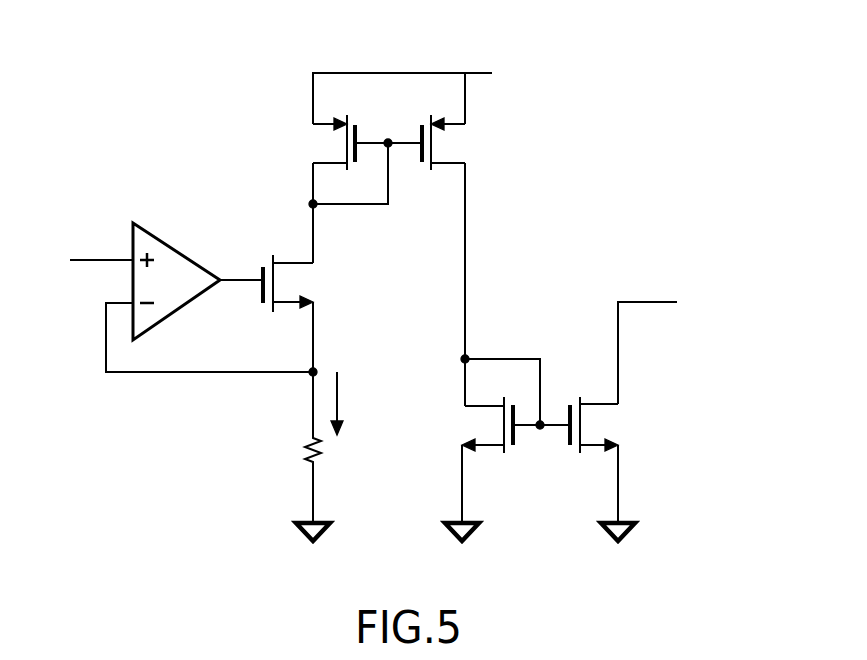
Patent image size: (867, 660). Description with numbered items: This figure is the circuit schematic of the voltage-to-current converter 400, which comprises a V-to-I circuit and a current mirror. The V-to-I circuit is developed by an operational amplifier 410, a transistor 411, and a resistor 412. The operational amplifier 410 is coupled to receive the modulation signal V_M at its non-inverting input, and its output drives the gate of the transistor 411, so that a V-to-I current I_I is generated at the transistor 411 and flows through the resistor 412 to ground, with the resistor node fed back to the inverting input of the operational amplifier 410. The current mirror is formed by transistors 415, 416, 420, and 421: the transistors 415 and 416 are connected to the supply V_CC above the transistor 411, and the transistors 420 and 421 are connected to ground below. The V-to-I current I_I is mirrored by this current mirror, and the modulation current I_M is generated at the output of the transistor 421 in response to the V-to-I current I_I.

The voltage-to-current converter 400 is at (813, 33).
The operational amplifier 410 is at (168, 236).
The transistor 411 is at (305, 278).
The resistor 412 is at (327, 447).
The transistor 415 is at (325, 149).
The transistor 416 is at (465, 148).
The transistor 420 is at (470, 430).
The transistor 421 is at (614, 432).